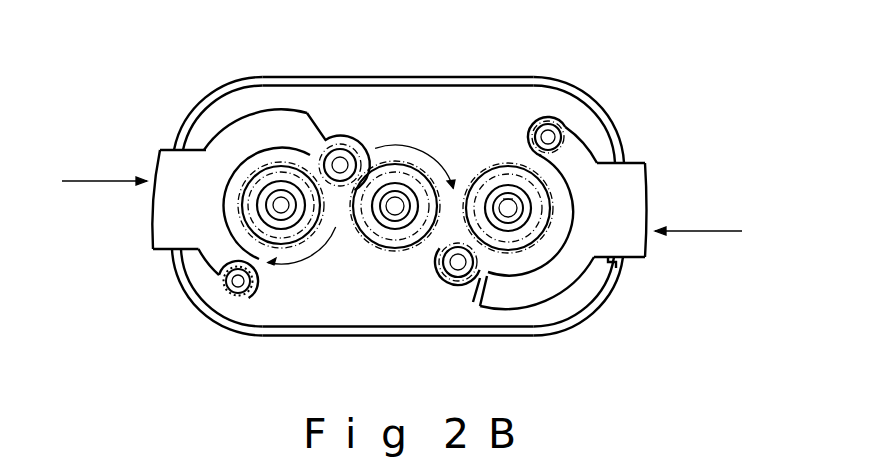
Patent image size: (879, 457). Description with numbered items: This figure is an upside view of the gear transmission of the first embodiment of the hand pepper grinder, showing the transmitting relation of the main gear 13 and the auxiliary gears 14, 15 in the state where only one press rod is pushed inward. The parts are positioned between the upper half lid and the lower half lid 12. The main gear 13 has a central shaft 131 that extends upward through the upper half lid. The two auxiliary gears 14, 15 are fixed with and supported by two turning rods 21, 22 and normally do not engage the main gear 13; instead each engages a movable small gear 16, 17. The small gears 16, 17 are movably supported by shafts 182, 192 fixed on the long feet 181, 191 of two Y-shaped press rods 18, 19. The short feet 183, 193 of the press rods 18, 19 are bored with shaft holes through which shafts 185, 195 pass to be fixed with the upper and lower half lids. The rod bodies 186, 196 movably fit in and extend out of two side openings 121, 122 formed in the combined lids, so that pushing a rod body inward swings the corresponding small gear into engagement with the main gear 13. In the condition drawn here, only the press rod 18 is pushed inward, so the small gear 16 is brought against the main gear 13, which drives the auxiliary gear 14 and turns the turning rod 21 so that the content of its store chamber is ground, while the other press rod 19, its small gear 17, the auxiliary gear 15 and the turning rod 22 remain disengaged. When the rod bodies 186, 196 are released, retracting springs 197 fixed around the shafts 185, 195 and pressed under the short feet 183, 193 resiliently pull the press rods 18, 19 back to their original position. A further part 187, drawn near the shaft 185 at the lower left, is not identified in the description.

The lower half lid 12 is at (378, 336).
The side opening 121 is at (172, 149).
The side opening 122 is at (616, 264).
The main gear 13 is at (407, 170).
The central shaft 131 is at (394, 212).
The auxiliary gear 14 is at (285, 258).
The auxiliary gear 15 is at (492, 167).
The movable small gear 16 is at (340, 157).
The movable small gear 17 is at (440, 271).
The Y-shaped press rod 18 is at (232, 135).
The long foot 181 is at (290, 127).
The shaft 182 is at (347, 140).
The short foot 183 is at (217, 263).
The shaft 185 is at (236, 283).
The rod body 186 is at (166, 218).
The bearing lobe 187 is at (232, 296).
The Y-shaped press rod 19 is at (597, 292).
The long foot 191 is at (545, 284).
The shaft 192 is at (457, 287).
The short foot 193 is at (575, 160).
The shaft 195 is at (544, 126).
The rod body 196 is at (620, 204).
The retracting spring 197 is at (553, 122).
The turning rod 21 is at (281, 193).
The turning rod 22 is at (508, 213).